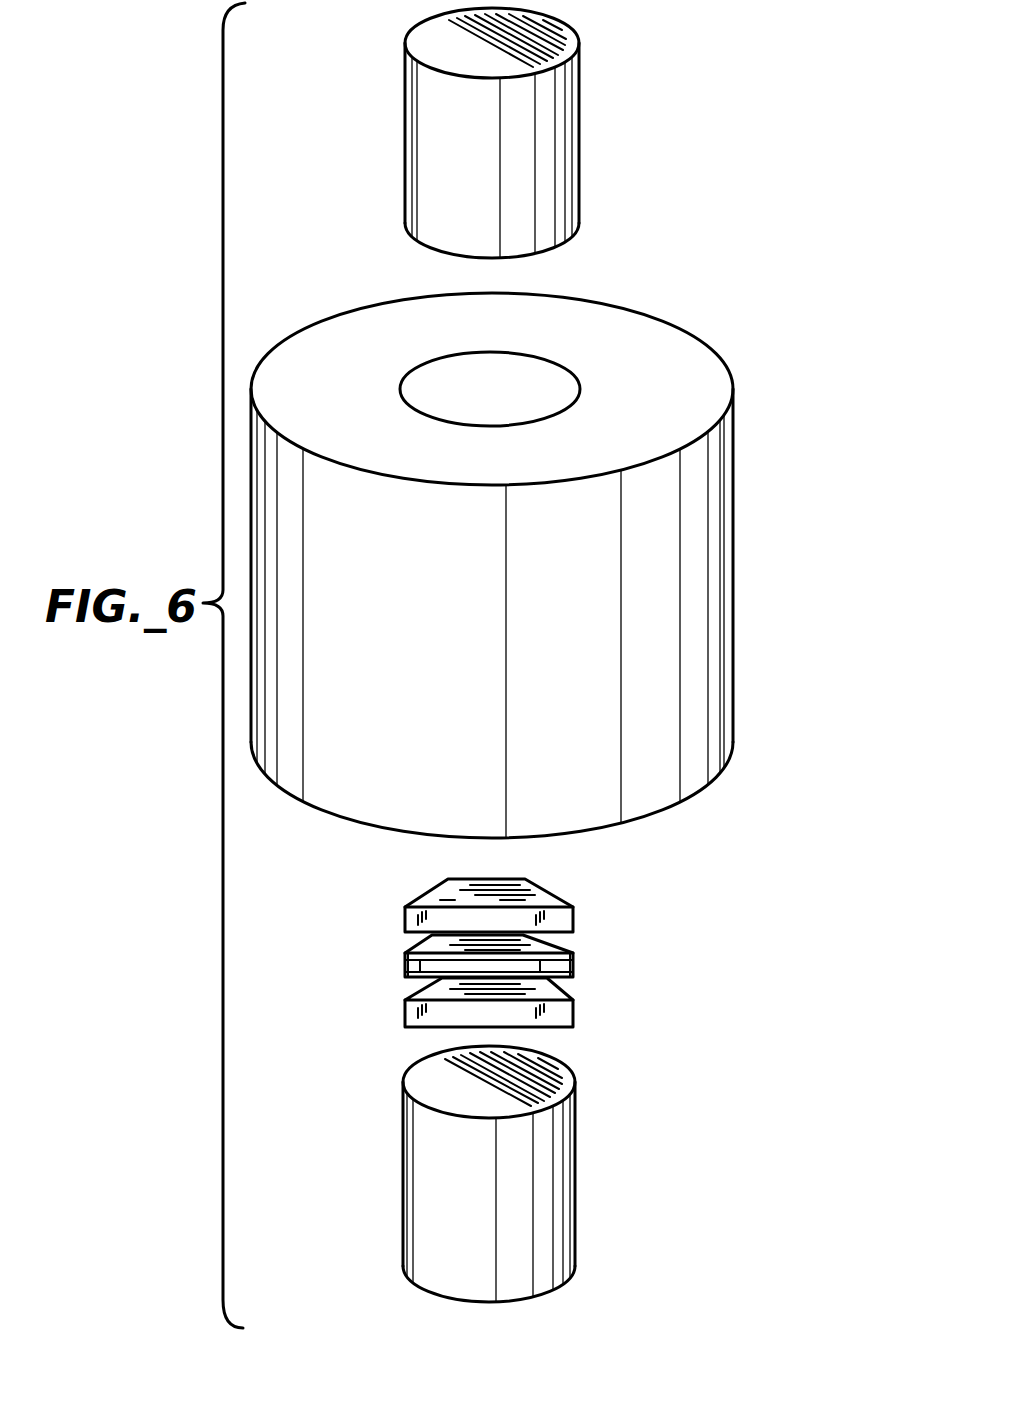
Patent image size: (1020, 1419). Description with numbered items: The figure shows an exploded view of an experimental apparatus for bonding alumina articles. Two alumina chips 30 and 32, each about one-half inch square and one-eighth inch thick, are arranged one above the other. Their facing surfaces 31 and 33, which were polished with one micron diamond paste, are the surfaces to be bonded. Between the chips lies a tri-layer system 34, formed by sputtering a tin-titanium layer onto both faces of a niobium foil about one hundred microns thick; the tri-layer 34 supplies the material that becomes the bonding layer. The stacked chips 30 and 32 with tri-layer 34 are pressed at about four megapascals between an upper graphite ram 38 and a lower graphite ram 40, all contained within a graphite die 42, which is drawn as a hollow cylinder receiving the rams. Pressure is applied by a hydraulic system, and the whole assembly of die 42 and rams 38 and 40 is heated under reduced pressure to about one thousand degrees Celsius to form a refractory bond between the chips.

The graphite ram 38 is at (575, 160).
The graphite die 42 is at (734, 566).
The alumina chip 30 is at (570, 903).
The surface to be bonded 31 is at (560, 937).
The tri-layer system 34 is at (575, 965).
The surface to be bonded 33 is at (556, 991).
The alumina chip 32 is at (565, 1025).
The graphite ram 40 is at (572, 1201).